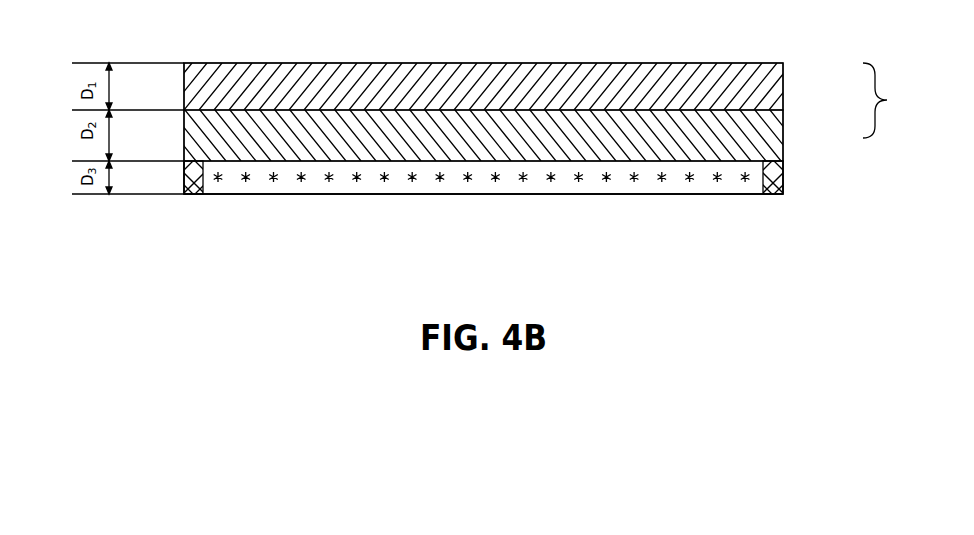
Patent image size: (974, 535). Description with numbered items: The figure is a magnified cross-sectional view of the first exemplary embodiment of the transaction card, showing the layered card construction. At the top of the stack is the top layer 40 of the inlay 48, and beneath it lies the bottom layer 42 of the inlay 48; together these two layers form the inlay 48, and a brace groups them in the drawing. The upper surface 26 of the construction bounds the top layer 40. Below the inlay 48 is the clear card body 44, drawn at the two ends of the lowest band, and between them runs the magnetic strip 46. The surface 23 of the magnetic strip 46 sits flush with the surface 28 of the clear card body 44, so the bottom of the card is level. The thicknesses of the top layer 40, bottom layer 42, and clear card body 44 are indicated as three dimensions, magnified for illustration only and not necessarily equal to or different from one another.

The surface 26 is at (445, 65).
The top layer 40 is at (773, 92).
The bottom layer 42 is at (771, 138).
The inlay 48 is at (892, 100).
The surface 23 is at (393, 195).
The magnetic strip 46 is at (563, 183).
The clear card body 44 is at (183, 165).
The surface 28 is at (198, 195).